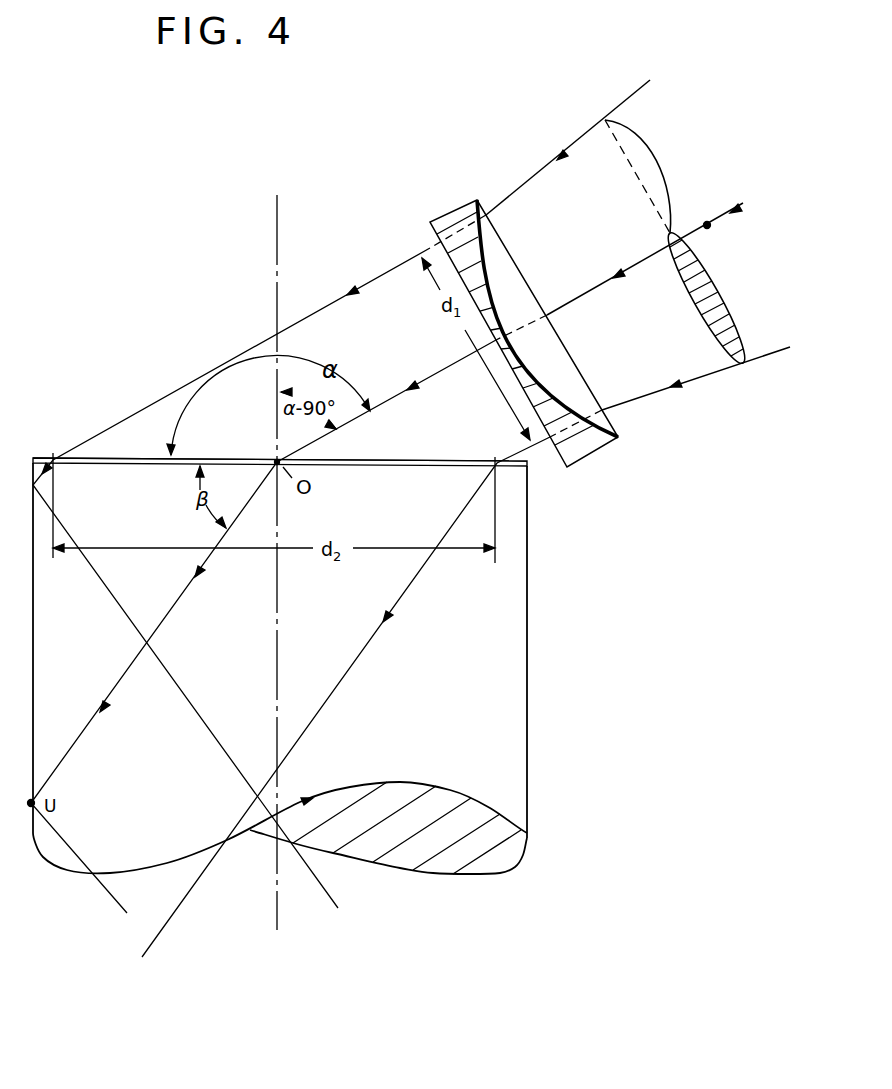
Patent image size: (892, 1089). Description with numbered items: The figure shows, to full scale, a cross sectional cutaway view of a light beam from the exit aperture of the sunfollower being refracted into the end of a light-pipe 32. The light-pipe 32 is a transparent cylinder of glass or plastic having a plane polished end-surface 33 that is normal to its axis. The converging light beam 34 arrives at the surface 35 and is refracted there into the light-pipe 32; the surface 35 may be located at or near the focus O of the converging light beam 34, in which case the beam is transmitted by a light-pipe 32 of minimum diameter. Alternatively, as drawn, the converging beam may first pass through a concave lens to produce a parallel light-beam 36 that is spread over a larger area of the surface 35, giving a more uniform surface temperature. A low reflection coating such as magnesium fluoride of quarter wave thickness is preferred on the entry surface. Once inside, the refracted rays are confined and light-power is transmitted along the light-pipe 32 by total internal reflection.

The light-pipe 32 is at (512, 644).
The plane polished end-surface 33 is at (510, 470).
The light beam 34 is at (640, 345).
The surface 35 is at (452, 461).
The parallel light-beam 36 is at (396, 338).